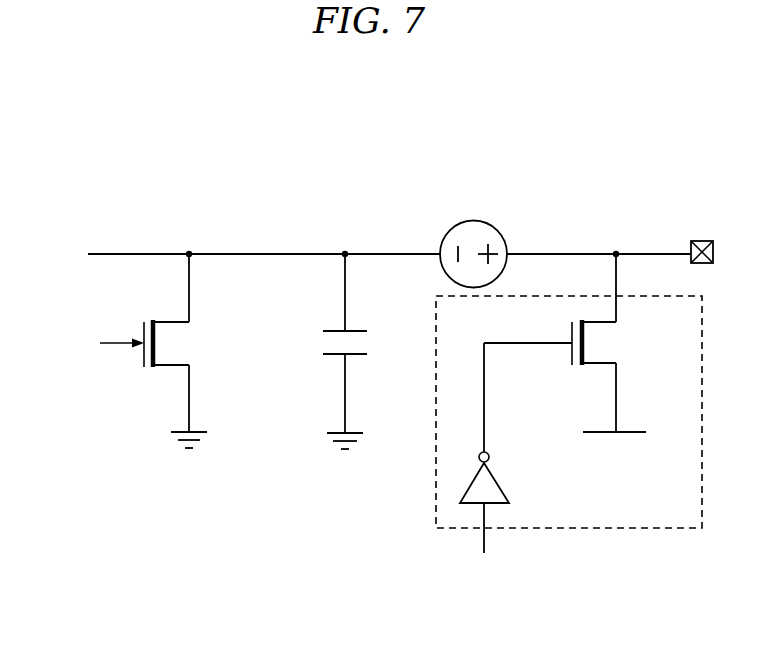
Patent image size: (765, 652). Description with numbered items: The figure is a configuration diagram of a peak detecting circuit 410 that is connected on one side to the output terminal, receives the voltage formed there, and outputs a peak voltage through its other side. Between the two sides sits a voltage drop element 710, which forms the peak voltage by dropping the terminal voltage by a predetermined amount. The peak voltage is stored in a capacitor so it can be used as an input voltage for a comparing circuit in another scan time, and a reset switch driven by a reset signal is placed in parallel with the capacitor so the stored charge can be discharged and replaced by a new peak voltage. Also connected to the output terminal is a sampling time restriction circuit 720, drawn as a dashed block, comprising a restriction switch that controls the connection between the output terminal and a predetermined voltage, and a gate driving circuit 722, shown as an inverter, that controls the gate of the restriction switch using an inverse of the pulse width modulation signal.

The peak detecting circuit 410 is at (123, 113).
The voltage drop element 710 is at (448, 230).
The sampling time restriction circuit 720 is at (600, 530).
The gate driving circuit 722 is at (467, 487).